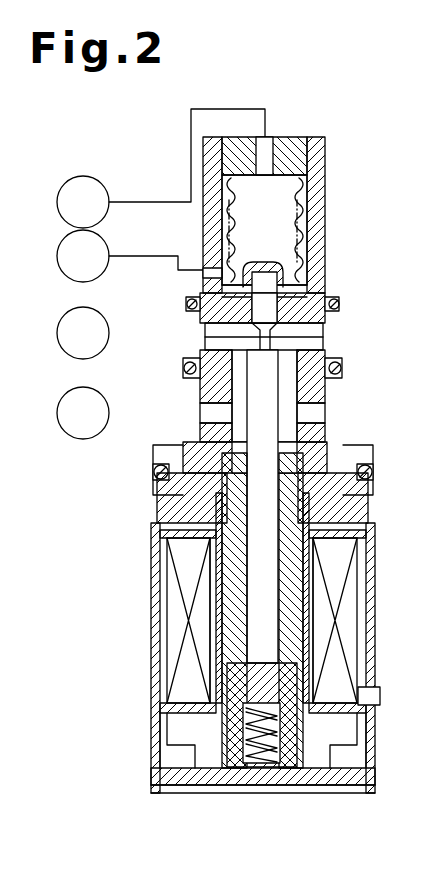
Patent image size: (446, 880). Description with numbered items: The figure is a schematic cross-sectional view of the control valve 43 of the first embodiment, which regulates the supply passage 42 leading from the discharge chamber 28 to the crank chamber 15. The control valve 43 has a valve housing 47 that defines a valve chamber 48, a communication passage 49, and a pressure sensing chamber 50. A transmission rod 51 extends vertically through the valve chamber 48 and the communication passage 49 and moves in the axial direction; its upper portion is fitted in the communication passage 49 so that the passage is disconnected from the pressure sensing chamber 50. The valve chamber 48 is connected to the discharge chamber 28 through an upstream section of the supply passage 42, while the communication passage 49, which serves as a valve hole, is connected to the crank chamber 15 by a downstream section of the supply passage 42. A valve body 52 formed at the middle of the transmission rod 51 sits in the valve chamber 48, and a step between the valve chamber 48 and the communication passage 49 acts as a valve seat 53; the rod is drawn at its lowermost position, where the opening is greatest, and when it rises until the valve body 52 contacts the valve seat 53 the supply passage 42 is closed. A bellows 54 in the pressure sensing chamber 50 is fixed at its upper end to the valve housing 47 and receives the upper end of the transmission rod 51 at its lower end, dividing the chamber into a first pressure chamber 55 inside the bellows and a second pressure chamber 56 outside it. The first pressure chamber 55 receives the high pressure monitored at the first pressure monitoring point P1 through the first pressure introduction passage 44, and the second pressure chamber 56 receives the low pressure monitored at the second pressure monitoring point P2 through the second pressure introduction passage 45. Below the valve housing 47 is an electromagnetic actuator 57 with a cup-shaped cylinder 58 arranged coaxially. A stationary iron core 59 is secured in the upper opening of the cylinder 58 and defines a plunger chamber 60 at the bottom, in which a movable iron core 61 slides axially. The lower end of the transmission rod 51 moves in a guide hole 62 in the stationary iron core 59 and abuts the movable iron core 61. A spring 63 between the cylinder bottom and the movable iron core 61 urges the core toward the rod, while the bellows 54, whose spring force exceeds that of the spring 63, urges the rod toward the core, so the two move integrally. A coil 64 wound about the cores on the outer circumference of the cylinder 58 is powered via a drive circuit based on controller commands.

The crank chamber 15 is at (120, 337).
The discharge chamber 28 is at (189, 417).
The supply passage 42 is at (128, 340).
The control valve 43 is at (311, 133).
The first pressure introduction passage 44 is at (128, 200).
The second pressure introduction passage 45 is at (131, 256).
The valve housing 47 is at (341, 357).
The valve chamber 48 is at (305, 387).
The communication passage 49 is at (290, 340).
The pressure sensing chamber 50 is at (305, 210).
The transmission rod 51 is at (280, 437).
The valve body 52 is at (296, 398).
The valve seat 53 is at (187, 360).
The bellows 54 is at (325, 258).
The first pressure chamber 55 is at (278, 217).
The second pressure chamber 56 is at (203, 293).
The electromagnetic actuator 57 is at (389, 547).
The cylinder 58 is at (335, 507).
The stationary iron core 59 is at (346, 456).
The plunger chamber 60 is at (294, 653).
The movable iron core 61 is at (291, 672).
The guide hole 62 is at (250, 547).
The spring 63 is at (254, 765).
The coil 64 is at (353, 585).
The first pressure monitoring point P1 is at (82, 176).
The second pressure monitoring point P2 is at (82, 282).